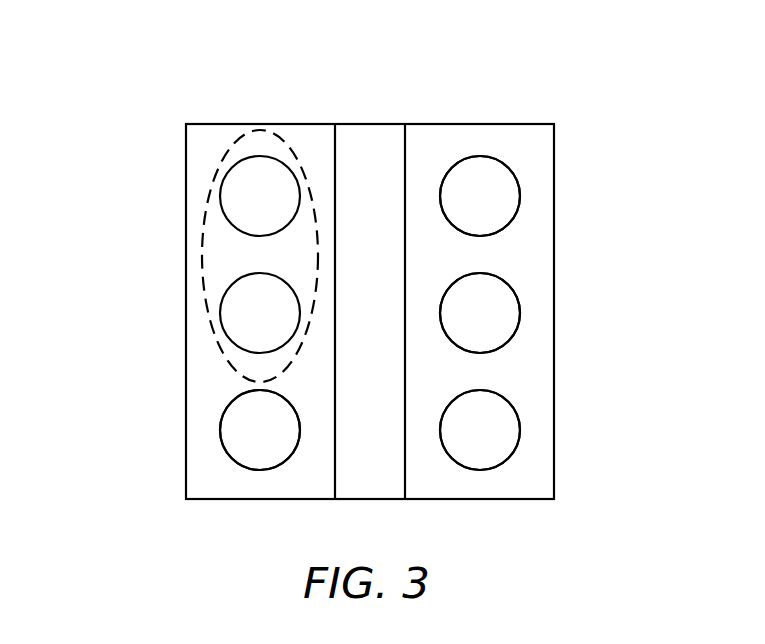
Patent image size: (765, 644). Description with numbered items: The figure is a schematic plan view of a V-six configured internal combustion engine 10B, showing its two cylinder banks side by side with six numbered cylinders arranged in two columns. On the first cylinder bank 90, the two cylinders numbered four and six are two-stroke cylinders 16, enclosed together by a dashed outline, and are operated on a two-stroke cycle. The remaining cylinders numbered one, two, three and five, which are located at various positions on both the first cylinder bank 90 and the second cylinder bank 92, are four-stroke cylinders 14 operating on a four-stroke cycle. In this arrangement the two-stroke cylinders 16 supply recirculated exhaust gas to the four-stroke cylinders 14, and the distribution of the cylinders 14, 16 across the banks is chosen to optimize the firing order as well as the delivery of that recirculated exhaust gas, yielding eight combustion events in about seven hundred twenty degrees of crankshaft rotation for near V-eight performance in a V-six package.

The internal combustion engine 10B is at (262, 110).
The 4-stroke cylinders 14 is at (235, 433).
The 2-stroke cylinders 16 is at (209, 162).
The first cylinder bank 90 is at (185, 270).
The second cylinder bank 92 is at (555, 410).